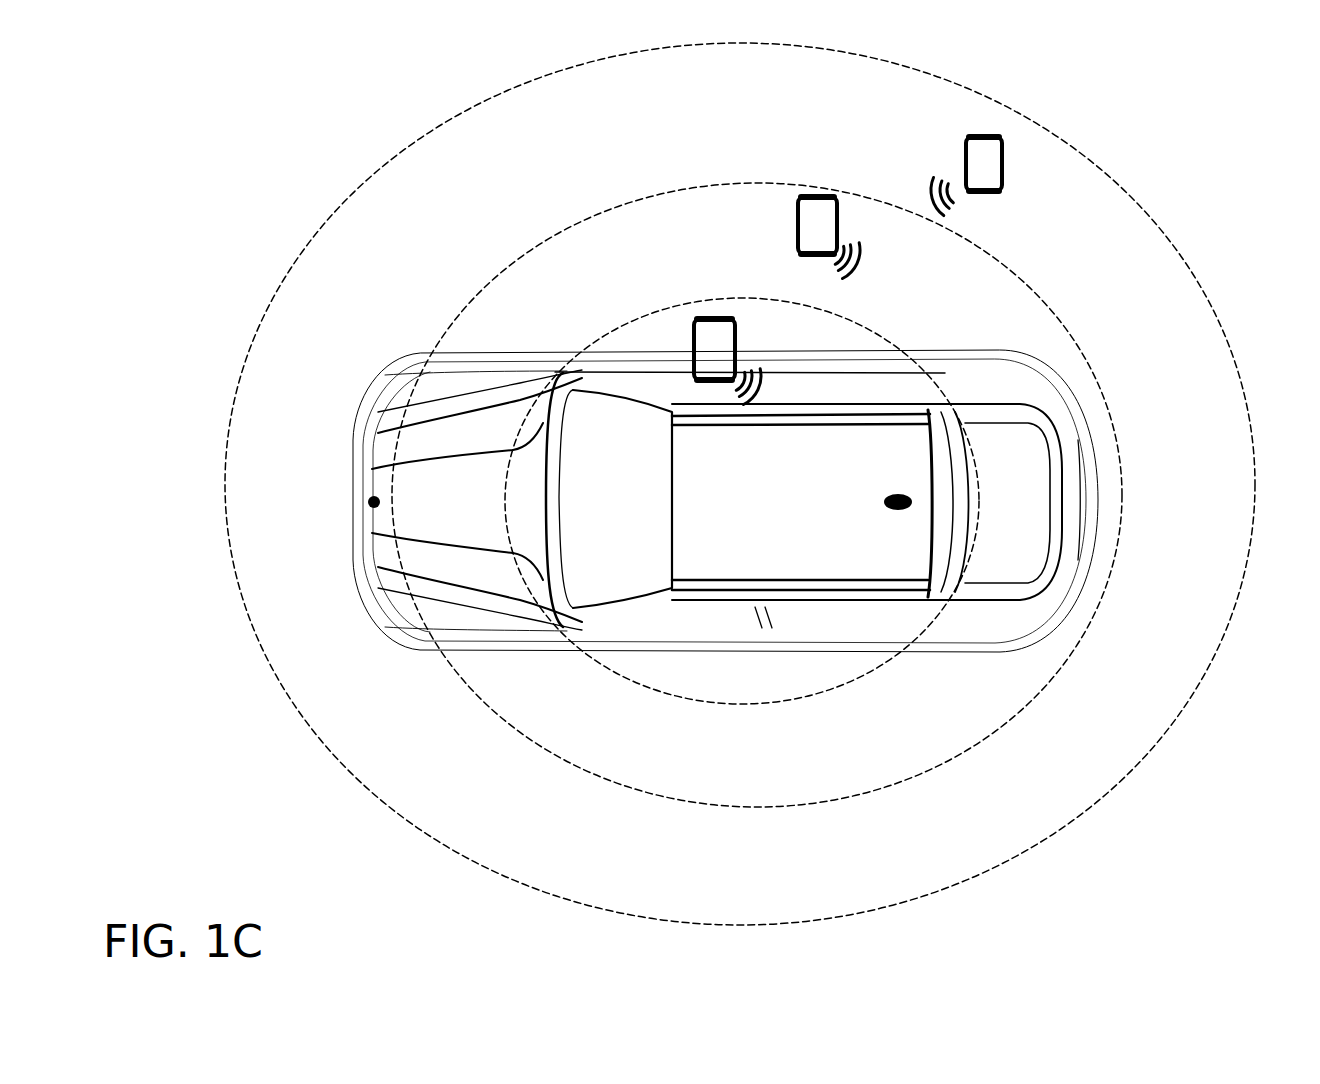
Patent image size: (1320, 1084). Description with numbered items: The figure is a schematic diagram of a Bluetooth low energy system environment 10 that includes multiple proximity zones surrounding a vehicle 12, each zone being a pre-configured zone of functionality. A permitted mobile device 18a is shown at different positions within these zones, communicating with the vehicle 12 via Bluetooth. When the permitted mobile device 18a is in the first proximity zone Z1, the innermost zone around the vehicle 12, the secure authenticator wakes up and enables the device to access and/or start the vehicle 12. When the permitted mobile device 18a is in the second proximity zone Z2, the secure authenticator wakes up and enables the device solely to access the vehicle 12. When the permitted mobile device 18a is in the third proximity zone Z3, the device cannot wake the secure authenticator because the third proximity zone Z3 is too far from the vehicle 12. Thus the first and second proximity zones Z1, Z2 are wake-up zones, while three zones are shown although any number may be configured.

The Bluetooth low energy environment 10 is at (1236, 811).
The vehicle 12 is at (1053, 367).
The permitted mobile device 18a is at (703, 318).
The first proximity zone Z1 is at (600, 342).
The second proximity zone Z2 is at (484, 290).
The third proximity zone Z3 is at (374, 177).